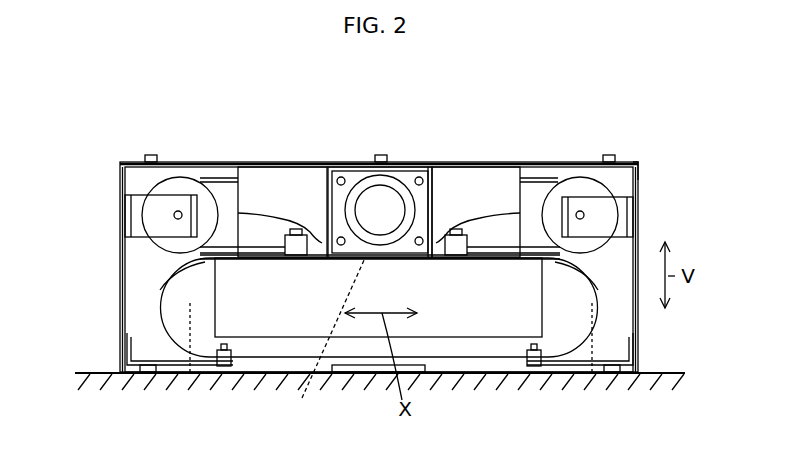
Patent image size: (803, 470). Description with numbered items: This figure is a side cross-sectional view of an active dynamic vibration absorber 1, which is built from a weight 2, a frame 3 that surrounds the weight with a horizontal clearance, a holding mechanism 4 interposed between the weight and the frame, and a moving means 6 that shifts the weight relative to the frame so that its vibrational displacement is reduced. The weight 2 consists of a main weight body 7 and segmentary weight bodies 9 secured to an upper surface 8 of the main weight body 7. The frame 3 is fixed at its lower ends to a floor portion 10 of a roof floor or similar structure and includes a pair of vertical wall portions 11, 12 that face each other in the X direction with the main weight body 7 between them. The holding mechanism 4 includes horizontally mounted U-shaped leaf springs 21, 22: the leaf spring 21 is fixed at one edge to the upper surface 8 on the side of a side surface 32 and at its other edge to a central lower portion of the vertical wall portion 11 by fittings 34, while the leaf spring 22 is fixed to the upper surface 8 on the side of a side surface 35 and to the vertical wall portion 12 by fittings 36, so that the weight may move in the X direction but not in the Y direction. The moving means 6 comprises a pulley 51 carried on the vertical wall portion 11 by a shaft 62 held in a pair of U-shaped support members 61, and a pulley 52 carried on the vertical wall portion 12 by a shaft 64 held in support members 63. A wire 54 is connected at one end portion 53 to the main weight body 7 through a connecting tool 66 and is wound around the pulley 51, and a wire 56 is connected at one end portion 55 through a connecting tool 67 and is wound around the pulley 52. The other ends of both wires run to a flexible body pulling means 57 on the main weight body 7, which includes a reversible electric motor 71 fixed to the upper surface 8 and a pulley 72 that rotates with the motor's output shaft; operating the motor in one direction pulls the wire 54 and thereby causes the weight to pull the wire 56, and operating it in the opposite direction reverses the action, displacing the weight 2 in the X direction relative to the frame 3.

The active dynamic vibration absorber 1 is at (108, 168).
The weight 2 is at (296, 160).
The frame 3 is at (122, 280).
The holding mechanism 4 is at (602, 310).
The moving means 6 is at (410, 178).
The main weight body 7 is at (273, 313).
The upper surface 8 is at (328, 338).
The segmentary weight bodies 9 is at (316, 187).
The floor portion 10 is at (95, 380).
The vertical wall portion 11 is at (122, 252).
The vertical wall portion 12 is at (640, 192).
The U-shaped leaf spring 21 is at (173, 372).
The U-shaped leaf spring 22 is at (610, 375).
The side surface 32 is at (222, 368).
The fittings 34 is at (190, 374).
The side surface 35 is at (553, 368).
The fittings 36 is at (592, 374).
The pulley 51 is at (186, 190).
The pulley 52 is at (578, 185).
The one end portion 53 is at (203, 273).
The wire 54 is at (218, 178).
The one end portion 55 is at (600, 250).
The wire 56 is at (533, 180).
The flexible body pulling means 57 is at (392, 165).
The support members 61 is at (138, 222).
The shaft 62 is at (178, 212).
The support members 63 is at (638, 172).
The shaft 64 is at (582, 213).
The connecting tool 66 is at (272, 240).
The connecting tool 67 is at (487, 247).
The reversible electric motor 71 is at (362, 190).
The pulley 72 is at (428, 235).